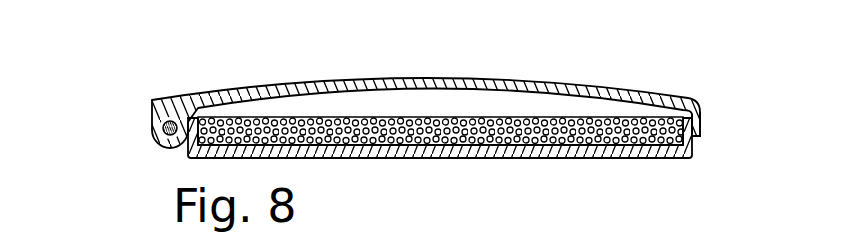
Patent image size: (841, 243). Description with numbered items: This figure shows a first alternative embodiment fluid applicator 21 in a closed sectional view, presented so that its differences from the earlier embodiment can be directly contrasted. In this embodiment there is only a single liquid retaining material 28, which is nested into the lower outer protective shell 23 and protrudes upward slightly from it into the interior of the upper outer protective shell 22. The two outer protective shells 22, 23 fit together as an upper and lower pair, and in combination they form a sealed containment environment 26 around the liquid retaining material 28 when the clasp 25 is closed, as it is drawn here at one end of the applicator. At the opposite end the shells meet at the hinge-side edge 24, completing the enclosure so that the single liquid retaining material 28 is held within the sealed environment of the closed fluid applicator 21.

The first alternative embodiment fluid applicator 21 is at (143, 35).
The outer protective shell 22 is at (612, 85).
The outer protective shell 23 is at (497, 158).
The hinge edge 24 is at (152, 133).
The clasp 25 is at (703, 127).
The sealed containment environment 26 is at (527, 103).
The liquid retaining material 28 is at (425, 117).